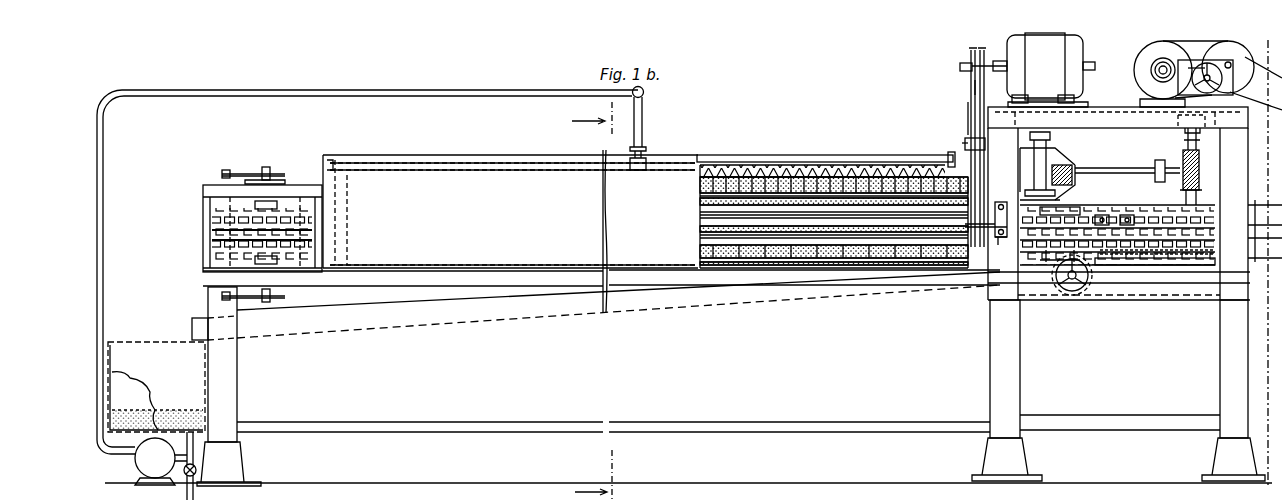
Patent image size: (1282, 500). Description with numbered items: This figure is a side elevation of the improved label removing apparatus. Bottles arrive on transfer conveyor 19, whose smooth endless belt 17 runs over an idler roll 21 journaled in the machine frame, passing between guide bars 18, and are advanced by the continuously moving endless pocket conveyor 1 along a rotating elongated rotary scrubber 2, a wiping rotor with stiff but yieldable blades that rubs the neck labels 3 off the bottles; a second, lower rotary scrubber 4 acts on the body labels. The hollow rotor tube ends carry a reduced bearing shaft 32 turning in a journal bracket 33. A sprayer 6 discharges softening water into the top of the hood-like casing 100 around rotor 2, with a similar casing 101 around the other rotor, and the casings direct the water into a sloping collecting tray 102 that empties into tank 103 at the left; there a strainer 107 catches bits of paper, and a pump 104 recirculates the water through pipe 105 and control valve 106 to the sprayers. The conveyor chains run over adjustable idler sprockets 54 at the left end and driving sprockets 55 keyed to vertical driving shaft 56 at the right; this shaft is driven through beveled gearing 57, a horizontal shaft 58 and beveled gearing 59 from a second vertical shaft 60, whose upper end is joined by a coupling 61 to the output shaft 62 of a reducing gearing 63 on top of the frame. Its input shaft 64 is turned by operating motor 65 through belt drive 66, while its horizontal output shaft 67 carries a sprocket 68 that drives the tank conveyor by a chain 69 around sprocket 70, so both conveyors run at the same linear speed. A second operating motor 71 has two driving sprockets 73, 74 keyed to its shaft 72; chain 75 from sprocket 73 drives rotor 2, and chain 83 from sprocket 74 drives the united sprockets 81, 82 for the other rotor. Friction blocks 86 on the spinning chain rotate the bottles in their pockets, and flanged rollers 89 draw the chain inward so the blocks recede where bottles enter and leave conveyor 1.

The endless conveyor 1 is at (1088, 211).
The rotary scrubber 2 is at (822, 185).
The neck labels 3 is at (592, 300).
The second rotary scrubber 4 is at (830, 497).
The sprayer 6 is at (762, 163).
The endless belt 17 is at (1262, 298).
The guide bars 18 is at (1258, 220).
The transfer conveyor 19 is at (1162, 270).
The idler roll 21 is at (1090, 272).
The bearing shaft 32 is at (1006, 204).
The journal bracket 33 is at (1000, 240).
The idler sprockets 54 is at (240, 207).
The driving sprockets 55 is at (1058, 210).
The vertical driving shaft 56 is at (1045, 170).
The bracket 57 is at (1050, 162).
The horizontal shaft 58 is at (1120, 170).
The beveled gearing 59 is at (1160, 193).
The second vertical shaft 60 is at (1200, 176).
The coupling 61 is at (1186, 137).
The output shaft 62 is at (1180, 114).
The reducing gearing 63 is at (1196, 60).
The input shaft 64 is at (1230, 62).
The operating motor 65 is at (1165, 36).
The belt drive 66 is at (1185, 52).
The horizontal output shaft 67 is at (1188, 82).
The sprocket 68 is at (1210, 72).
The chain 69 is at (1262, 107).
The sprocket 70 is at (688, 270).
The second operating motor 71 is at (1050, 42).
The motor shaft 72 is at (958, 67).
The driving sprocket 73 is at (982, 50).
The driving sprocket 74 is at (972, 50).
The chain 75 is at (974, 86).
The sprocket 81 is at (986, 145).
The second sprocket 82 is at (962, 143).
The chain 83 is at (968, 107).
The friction blocks 86 is at (1134, 222).
The flanged rollers 89 is at (1112, 216).
The hood-like casing 100 is at (368, 257).
The hood-like casing 101 is at (897, 493).
The sloping collecting tray 102 is at (562, 308).
The tank 103 is at (150, 345).
The pump 104 is at (147, 466).
The pipe 105 is at (297, 90).
The control valve 106 is at (650, 95).
The strainer 107 is at (140, 398).